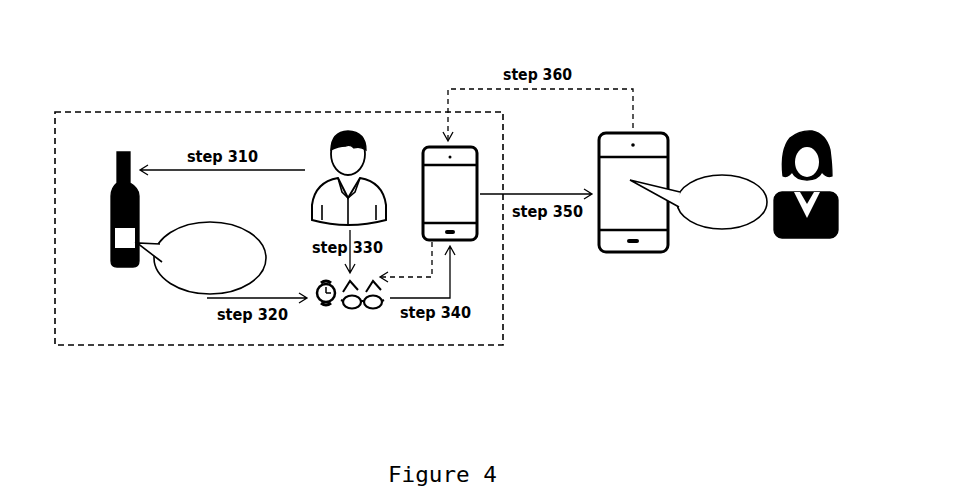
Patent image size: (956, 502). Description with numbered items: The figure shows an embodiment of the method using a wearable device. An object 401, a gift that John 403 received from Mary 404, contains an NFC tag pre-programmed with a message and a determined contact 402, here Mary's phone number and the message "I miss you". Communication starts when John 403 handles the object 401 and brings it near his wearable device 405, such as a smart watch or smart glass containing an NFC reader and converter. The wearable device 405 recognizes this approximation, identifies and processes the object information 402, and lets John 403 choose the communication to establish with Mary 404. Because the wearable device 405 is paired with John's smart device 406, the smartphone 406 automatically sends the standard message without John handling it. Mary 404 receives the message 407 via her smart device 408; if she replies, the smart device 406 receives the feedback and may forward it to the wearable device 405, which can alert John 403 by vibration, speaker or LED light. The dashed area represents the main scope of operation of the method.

The object 401 is at (127, 148).
The determined contact 402 is at (185, 293).
The user John 403 is at (348, 128).
The target contact Mary 404 is at (806, 203).
The wearable device 405 is at (351, 318).
The smart device 406 is at (476, 241).
The message 407 is at (713, 176).
The smart device 408 is at (662, 253).